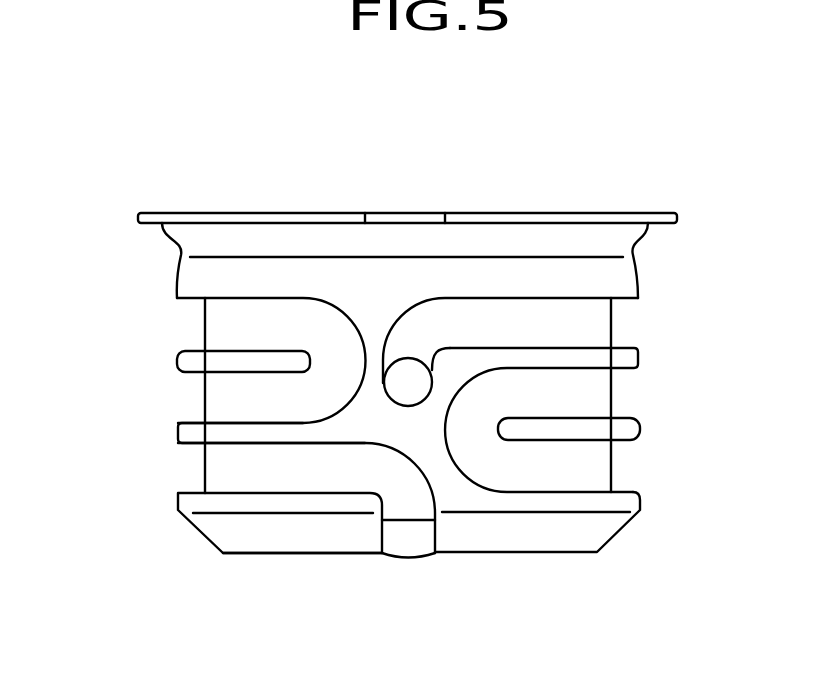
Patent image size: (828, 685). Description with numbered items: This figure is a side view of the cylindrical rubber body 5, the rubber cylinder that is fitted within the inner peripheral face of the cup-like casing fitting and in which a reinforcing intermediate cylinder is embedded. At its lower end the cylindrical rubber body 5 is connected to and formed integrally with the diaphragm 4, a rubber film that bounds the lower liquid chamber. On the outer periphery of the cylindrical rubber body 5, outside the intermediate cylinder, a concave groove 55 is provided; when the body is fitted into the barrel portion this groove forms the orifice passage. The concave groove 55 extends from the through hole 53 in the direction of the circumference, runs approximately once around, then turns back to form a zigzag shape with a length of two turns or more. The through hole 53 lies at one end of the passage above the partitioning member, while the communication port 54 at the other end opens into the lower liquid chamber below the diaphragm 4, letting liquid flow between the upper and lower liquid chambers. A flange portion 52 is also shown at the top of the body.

The diaphragm 4 is at (390, 556).
The cylindrical rubber body 5 is at (391, 375).
The flange plate 52 is at (650, 230).
The through hole 53 is at (393, 373).
The communication port 54 is at (423, 537).
The concave groove 55 is at (192, 407).